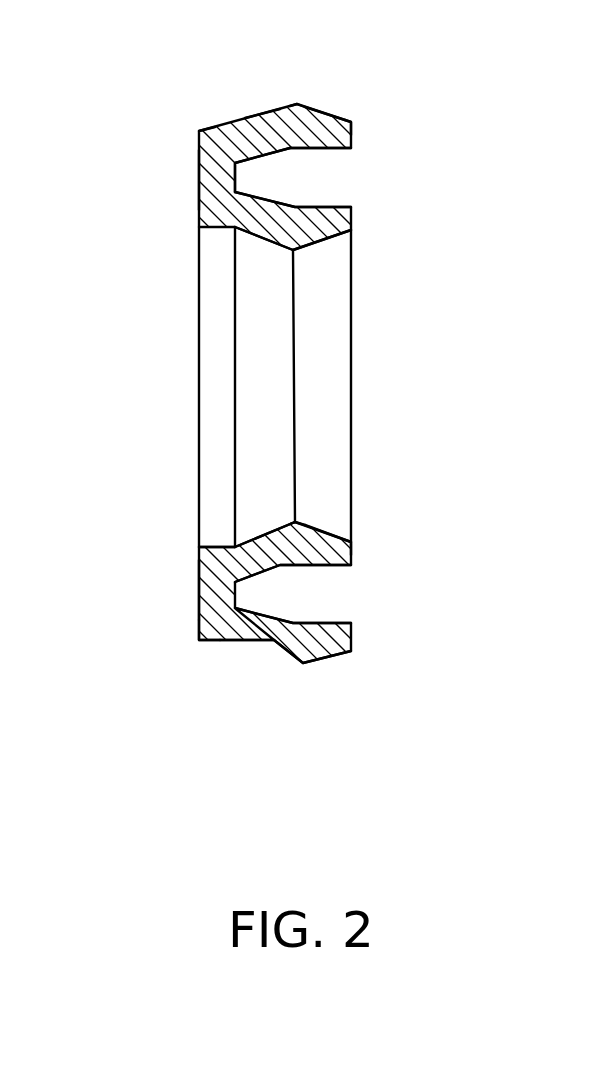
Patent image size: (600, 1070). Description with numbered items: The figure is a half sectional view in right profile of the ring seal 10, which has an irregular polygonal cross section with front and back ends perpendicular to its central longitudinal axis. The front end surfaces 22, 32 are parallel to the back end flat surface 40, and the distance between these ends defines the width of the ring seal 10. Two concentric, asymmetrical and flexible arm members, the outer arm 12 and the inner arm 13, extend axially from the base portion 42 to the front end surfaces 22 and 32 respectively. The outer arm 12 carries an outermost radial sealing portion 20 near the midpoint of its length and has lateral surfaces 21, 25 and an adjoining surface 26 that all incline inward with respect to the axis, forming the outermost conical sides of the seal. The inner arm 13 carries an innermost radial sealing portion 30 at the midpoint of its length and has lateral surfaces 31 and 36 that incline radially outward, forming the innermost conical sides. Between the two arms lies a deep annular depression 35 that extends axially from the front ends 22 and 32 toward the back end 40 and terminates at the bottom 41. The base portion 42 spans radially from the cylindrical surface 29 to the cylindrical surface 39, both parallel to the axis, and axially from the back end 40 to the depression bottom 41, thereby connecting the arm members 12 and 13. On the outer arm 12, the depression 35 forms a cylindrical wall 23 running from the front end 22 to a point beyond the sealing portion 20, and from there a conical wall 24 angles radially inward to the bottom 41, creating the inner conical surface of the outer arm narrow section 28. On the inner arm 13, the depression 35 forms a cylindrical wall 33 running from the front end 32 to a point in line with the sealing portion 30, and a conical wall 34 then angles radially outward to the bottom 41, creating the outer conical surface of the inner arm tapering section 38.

The ring seal 10 is at (198, 377).
The outer arm 12 is at (363, 638).
The inner arm 13 is at (362, 223).
The outermost radial sealing portion 20 is at (297, 103).
The lateral surface 21 is at (325, 110).
The front end surface 22 is at (353, 125).
The cylindrical wall 23 is at (320, 149).
The conical wall 24 is at (330, 181).
The annular depression 35 is at (335, 197).
The outer arm narrow section 28 is at (262, 122).
The cylindrical surface 29 is at (198, 130).
The back end flat surface 40 is at (198, 182).
The lateral surface 36 is at (267, 238).
The innermost radial sealing portion 30 is at (293, 250).
The inner arm tapering section 38 is at (267, 548).
The cylindrical surface 39 is at (207, 548).
The depression bottom 41 is at (200, 583).
The base portion 42 is at (222, 618).
The adjoining surface 26 is at (247, 645).
The lateral surface 25 is at (298, 662).
The lateral surface 31 is at (323, 527).
The front end surface 32 is at (355, 550).
The cylindrical wall 33 is at (330, 570).
The conical wall 34 is at (330, 607).